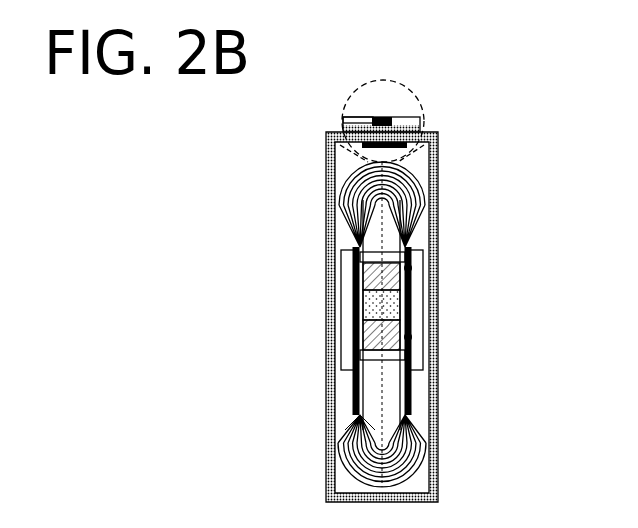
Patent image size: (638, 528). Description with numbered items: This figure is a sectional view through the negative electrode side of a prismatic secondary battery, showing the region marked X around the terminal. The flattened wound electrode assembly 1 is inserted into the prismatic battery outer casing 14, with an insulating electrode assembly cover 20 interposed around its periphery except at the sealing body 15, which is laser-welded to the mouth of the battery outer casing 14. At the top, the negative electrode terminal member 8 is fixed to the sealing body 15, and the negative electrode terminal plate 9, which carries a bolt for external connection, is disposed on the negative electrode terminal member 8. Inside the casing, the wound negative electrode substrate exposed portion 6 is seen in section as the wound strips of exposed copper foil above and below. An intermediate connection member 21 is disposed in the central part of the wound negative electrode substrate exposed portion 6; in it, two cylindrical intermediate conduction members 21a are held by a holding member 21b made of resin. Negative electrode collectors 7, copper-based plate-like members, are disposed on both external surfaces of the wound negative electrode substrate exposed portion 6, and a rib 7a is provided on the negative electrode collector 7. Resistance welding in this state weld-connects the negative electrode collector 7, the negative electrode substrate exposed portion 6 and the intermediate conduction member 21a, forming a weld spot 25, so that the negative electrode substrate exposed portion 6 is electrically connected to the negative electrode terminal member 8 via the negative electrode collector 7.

The region of interest X is at (444, 71).
The flattened wound electrode assembly 1 is at (345, 430).
The negative electrode substrate exposed portion 6 is at (424, 466).
The negative electrode collector 7 is at (438, 160).
The rib 7a is at (345, 341).
The negative electrode terminal member 8 is at (393, 114).
The negative electrode terminal plate 9 is at (340, 130).
The battery outer casing 14 is at (366, 400).
The sealing body 15 is at (340, 131).
The insulating electrode assembly cover 20 is at (438, 397).
The intermediate connection member 21 is at (392, 304).
The intermediate conduction member 21a is at (345, 253).
The holding member 21b is at (413, 253).
The weld spot 25 is at (410, 338).